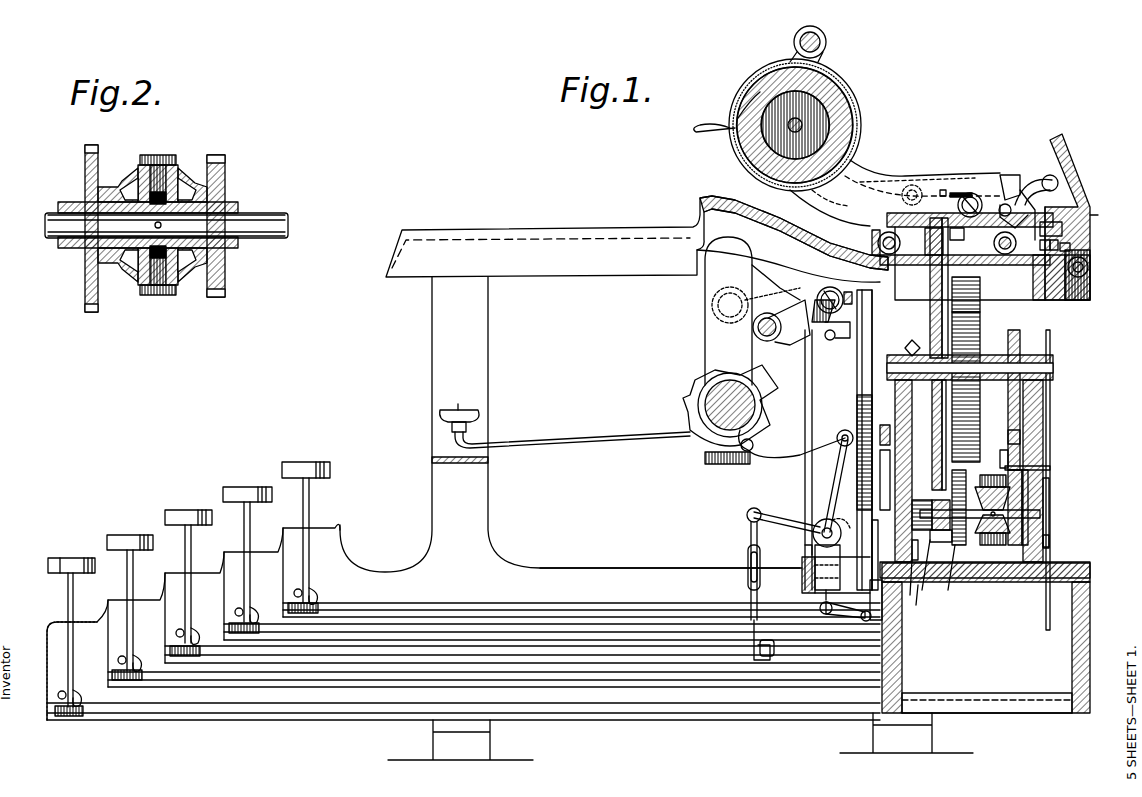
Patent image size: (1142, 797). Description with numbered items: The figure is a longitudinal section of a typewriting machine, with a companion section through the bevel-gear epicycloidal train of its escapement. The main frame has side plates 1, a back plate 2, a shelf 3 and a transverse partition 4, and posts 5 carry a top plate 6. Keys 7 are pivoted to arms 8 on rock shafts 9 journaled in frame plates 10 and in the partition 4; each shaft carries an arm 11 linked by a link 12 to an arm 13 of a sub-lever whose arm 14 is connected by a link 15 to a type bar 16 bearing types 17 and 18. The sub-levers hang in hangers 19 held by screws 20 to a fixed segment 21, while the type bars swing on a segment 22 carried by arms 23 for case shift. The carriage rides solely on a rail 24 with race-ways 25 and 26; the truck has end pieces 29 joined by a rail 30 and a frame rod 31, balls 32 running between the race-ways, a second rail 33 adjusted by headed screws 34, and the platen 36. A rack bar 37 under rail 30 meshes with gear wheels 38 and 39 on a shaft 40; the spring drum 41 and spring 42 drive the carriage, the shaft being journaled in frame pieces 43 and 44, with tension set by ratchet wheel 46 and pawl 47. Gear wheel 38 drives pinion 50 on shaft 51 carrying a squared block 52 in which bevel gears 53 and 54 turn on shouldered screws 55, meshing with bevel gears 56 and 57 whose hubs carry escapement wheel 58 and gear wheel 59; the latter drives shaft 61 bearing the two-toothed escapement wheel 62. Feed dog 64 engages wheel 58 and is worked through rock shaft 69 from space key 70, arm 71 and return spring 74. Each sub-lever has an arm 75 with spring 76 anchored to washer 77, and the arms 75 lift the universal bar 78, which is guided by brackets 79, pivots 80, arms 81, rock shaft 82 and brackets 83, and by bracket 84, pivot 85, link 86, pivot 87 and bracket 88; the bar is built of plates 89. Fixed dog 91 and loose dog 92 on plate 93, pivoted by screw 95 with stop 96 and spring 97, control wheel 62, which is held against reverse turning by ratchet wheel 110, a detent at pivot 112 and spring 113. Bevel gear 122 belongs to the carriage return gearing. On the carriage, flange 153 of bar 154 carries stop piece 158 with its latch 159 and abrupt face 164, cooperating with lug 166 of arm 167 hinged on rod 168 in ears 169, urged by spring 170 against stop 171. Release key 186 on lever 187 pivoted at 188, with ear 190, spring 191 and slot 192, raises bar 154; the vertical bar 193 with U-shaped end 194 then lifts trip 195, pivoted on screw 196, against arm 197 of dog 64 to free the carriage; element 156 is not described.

In FIG. 1, the side plates 1 is at (677, 568).
In FIG. 1, the back plate 2 is at (1072, 655).
In FIG. 1, the shelf 3 is at (985, 578).
In FIG. 1, the transverse partition 4 is at (902, 638).
In FIG. 1, the posts 5 is at (488, 362).
In FIG. 1, the top plate 6 is at (722, 212).
In FIG. 1, the keys 7 is at (177, 512).
In FIG. 1, the arms 8 is at (219, 631).
In FIG. 1, the rock shafts 9 is at (208, 685).
In FIG. 1, the frame plates 10 is at (47, 636).
In FIG. 1, the arm 11 is at (760, 648).
In FIG. 1, the link 12 is at (750, 527).
In FIG. 1, the arm of sub-lever 13 is at (785, 520).
In FIG. 1, the arm of sub-lever 14 is at (833, 470).
In FIG. 1, the link 15 is at (780, 450).
In FIG. 1, the type bar 16 is at (594, 447).
In FIG. 1, the type 17 is at (446, 410).
In FIG. 1, the type 18 is at (468, 410).
In FIG. 1, the hangers 19 is at (800, 545).
In FIG. 1, the screws 20 is at (836, 577).
In FIG. 1, the fixed segment 21 is at (812, 418).
In FIG. 1, the segment 22 is at (752, 311).
In FIG. 1, the arms 23 is at (752, 300).
In FIG. 1, the rail 24 is at (895, 265).
In FIG. 1, the race-way 25 is at (925, 236).
In FIG. 1, the race-way 26 is at (964, 240).
In FIG. 1, the end pieces 29 is at (858, 170).
In FIG. 1, the rail 30 is at (877, 243).
In FIG. 1, the frame rod 31 is at (826, 42).
In FIG. 1, the anti-friction balls 32 is at (884, 252).
In FIG. 1, the second rail 33 is at (1000, 205).
In FIG. 1, the headed screws 34 is at (974, 192).
In FIG. 1, the platen 36 is at (858, 118).
In FIG. 1, the rack bar 37 is at (940, 213).
In FIG. 1, the gear wheel 38 is at (930, 300).
In FIG. 1, the gear wheel 39 is at (942, 318).
In FIG. 1, the shaft 40 is at (895, 355).
In FIG. 1, the spring drum 41 is at (980, 292).
In FIG. 1, the spring 42 is at (980, 316).
In FIG. 1, the frame piece 43 is at (1043, 400).
In FIG. 1, the frame piece 44 is at (912, 420).
In FIG. 1, the ratchet wheel 46 is at (1020, 328).
In FIG. 1, the pawl 47 is at (1008, 432).
In FIG. 1, the pinion 50 is at (941, 546).
In FIG. 1, the shaft 51 is at (1040, 516).
In FIG. 2, the shaft 51 is at (262, 213).
In FIG. 1, the squared block 52 is at (989, 535).
In FIG. 2, the squared block 52 is at (188, 275).
In FIG. 1, the beveled gear 53 is at (975, 476).
In FIG. 2, the beveled gear 53 is at (180, 170).
In FIG. 1, the beveled gear 54 is at (992, 524).
In FIG. 2, the beveled gear 54 is at (130, 270).
In FIG. 1, the shouldered screws 55 is at (990, 475).
In FIG. 2, the shouldered screws 55 is at (148, 153).
In FIG. 1, the beveled gear 56 is at (1030, 485).
In FIG. 2, the beveled gear 56 is at (182, 180).
In FIG. 1, the beveled gear 57 is at (931, 573).
In FIG. 2, the beveled gear 57 is at (125, 260).
In FIG. 1, the escapement wheel 58 is at (1011, 515).
In FIG. 2, the escapement wheel 58 is at (225, 272).
In FIG. 1, the gear wheel 59 is at (954, 575).
In FIG. 2, the gear wheel 59 is at (85, 287).
In FIG. 1, the shaft 61 is at (918, 500).
In FIG. 1, the escapement wheel 62 is at (884, 538).
In FIG. 1, the feed dog 64 is at (1004, 459).
In FIG. 1, the rock shaft 69 is at (1000, 692).
In FIG. 1, the space key 70 is at (62, 558).
In FIG. 1, the arm 71 is at (80, 698).
In FIG. 1, the spring 74 is at (65, 716).
In FIG. 1, the arm 75 is at (798, 135).
In FIG. 1, the spring 76 is at (828, 547).
In FIG. 1, the washer 77 is at (914, 585).
In FIG. 1, the universal bar 78 is at (857, 370).
In FIG. 1, the brackets 79 is at (832, 333).
In FIG. 1, the pivot 80 is at (820, 345).
In FIG. 1, the arm 81 is at (790, 345).
In FIG. 1, the rock shaft 82 is at (778, 345).
In FIG. 1, the brackets 83 is at (850, 320).
In FIG. 1, the bracket 84 is at (893, 606).
In FIG. 1, the pivot 85 is at (868, 622).
In FIG. 1, the link 86 is at (848, 614).
In FIG. 1, the pivot 87 is at (822, 612).
In FIG. 1, the bracket 88 is at (786, 580).
In FIG. 1, the segmental plates 89 is at (857, 384).
In FIG. 1, the fixed dog 91 is at (942, 462).
In FIG. 1, the loose dog 92 is at (935, 440).
In FIG. 1, the sheet metal plate 93 is at (844, 519).
In FIG. 1, the screw 95 is at (885, 425).
In FIG. 1, the stop 96 is at (850, 432).
In FIG. 1, the spring 97 is at (872, 398).
In FIG. 1, the ratchet wheel 110 is at (942, 524).
In FIG. 1, the pivot 112 is at (933, 557).
In FIG. 1, the spring 113 is at (930, 603).
In FIG. 1, the bevel-gear 122 is at (920, 339).
In FIG. 1, the flange 153 is at (1060, 222).
In FIG. 1, the bar 154 is at (1038, 183).
In FIG. 1, the arm 156 is at (1020, 208).
In FIG. 1, the stop piece 158 is at (1006, 173).
In FIG. 1, the latch 159 is at (1052, 184).
In FIG. 1, the abrupt face 164 is at (1086, 237).
In FIG. 1, the lug 166 is at (1090, 195).
In FIG. 1, the arm 167 is at (1107, 214).
In FIG. 1, the rod 168 is at (1080, 300).
In FIG. 1, the ears 169 is at (1068, 290).
In FIG. 1, the spring 170 is at (1088, 262).
In FIG. 1, the stop 171 is at (1070, 247).
In FIG. 1, the carriage release key 186 is at (712, 122).
In FIG. 1, the lever 187 is at (824, 201).
In FIG. 1, the pivot 188 is at (912, 185).
In FIG. 1, the ear 190 is at (960, 193).
In FIG. 1, the spring 191 is at (943, 190).
In FIG. 1, the elongated slot 192 is at (800, 120).
In FIG. 1, the vertically disposed bar 193 is at (1050, 345).
In FIG. 1, the U-shaped upper end 194 is at (1079, 238).
In FIG. 1, the trip 195 is at (1049, 500).
In FIG. 1, the shouldered screw 196 is at (1049, 540).
In FIG. 1, the arm 197 is at (1050, 468).